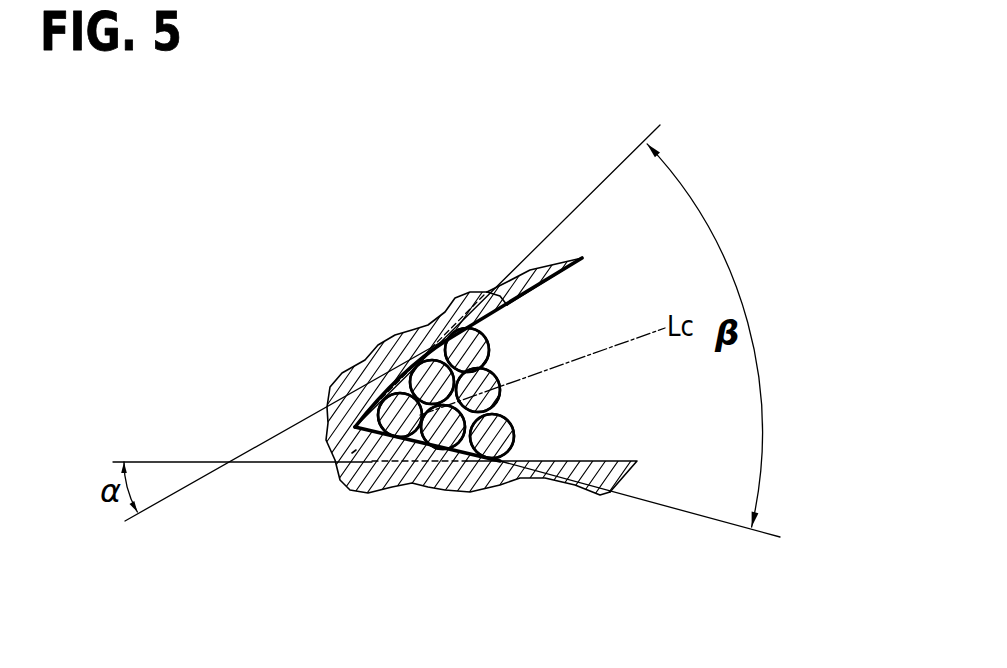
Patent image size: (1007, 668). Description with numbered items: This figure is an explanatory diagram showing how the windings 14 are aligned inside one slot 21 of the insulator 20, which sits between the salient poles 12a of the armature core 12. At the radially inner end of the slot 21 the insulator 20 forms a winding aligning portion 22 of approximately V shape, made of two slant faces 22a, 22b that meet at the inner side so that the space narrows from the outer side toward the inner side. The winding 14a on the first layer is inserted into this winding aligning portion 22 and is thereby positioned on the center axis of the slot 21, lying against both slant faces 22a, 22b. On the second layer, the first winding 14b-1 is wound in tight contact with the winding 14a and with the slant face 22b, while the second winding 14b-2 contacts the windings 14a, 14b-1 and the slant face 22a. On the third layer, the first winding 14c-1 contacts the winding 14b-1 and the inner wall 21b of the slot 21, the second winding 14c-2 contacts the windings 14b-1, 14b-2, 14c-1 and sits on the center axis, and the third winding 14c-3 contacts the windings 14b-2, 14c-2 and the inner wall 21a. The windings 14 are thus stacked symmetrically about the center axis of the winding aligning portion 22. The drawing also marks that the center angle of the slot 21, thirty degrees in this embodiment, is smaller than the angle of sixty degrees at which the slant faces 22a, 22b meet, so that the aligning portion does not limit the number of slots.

The armature core 12 is at (368, 495).
The salient pole 12a is at (400, 360).
The winding 14 is at (528, 313).
The winding on the first layer 14a is at (387, 398).
The first winding on the second layer 14b-1 is at (445, 450).
The second winding on the second layer 14b-2 is at (435, 362).
The first winding on the third layer 14c-1 is at (510, 450).
The second winding on the third layer 14c-2 is at (500, 380).
The third winding on the third layer 14c-3 is at (470, 328).
The insulator 20 is at (452, 146).
The slot 21 is at (590, 326).
The inner wall of the slot 21a is at (570, 265).
The inner wall of the slot 21b is at (622, 461).
The winding aligning portion 22 is at (218, 488).
The slant face 22a is at (345, 408).
The slant face 22b is at (350, 458).